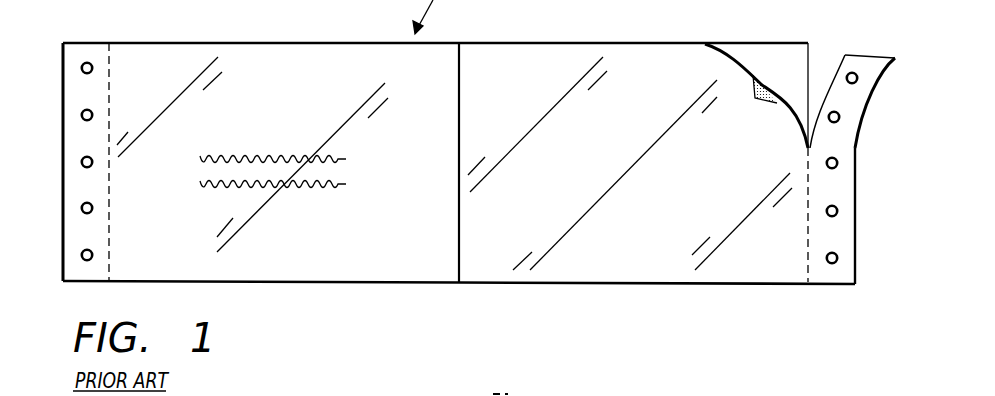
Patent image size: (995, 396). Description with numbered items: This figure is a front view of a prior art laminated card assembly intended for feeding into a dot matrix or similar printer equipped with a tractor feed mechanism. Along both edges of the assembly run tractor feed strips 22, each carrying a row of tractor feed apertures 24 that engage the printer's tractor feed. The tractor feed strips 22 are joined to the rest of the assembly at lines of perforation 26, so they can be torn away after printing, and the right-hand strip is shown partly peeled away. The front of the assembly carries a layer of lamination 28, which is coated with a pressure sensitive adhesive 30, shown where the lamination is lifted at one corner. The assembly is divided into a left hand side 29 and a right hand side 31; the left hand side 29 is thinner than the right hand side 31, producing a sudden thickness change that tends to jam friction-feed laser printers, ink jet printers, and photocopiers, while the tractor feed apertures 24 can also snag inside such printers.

The tractor feed strips 22 is at (70, 53).
The tractor feed apertures 24 is at (82, 115).
The lines of perforation 26 is at (112, 57).
The layer of lamination 28 is at (263, 68).
The left hand side 29 is at (333, 270).
The pressure sensitive adhesive 30 is at (764, 90).
The right hand side 31 is at (633, 272).